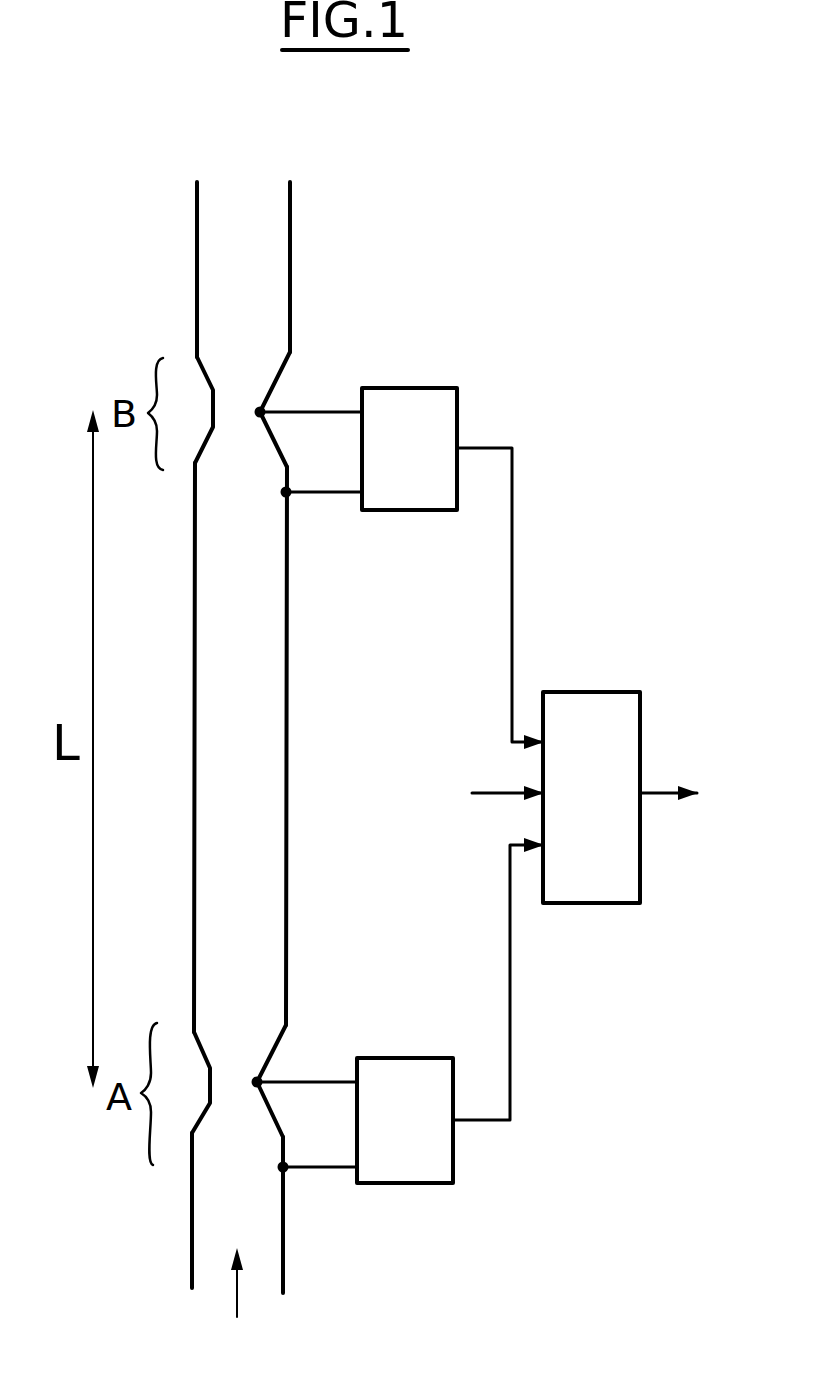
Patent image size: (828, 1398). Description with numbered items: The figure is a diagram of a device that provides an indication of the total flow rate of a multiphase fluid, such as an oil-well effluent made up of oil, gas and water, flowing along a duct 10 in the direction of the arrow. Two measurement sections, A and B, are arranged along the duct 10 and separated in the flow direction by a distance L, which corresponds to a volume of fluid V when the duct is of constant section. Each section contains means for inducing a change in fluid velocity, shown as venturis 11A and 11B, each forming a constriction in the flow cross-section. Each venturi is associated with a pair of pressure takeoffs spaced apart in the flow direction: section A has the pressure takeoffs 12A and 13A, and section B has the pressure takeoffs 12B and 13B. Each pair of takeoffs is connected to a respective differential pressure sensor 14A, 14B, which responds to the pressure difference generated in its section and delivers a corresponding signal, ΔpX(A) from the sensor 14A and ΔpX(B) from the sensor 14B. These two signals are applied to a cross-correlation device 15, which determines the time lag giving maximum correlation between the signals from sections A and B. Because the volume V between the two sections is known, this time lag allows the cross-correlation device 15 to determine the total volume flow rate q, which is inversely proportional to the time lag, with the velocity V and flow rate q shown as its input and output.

The duct 10 is at (192, 1253).
The venturi 11A is at (213, 1083).
The venturi 11B is at (222, 405).
The pressure takeoff 12A is at (288, 1173).
The pressure takeoff 12B is at (292, 500).
The pressure takeoff 13A is at (259, 1080).
The pressure takeoff 13B is at (262, 410).
The differential pressure sensor 14A is at (433, 1185).
The differential pressure sensor 14B is at (443, 388).
The cross-correlation device 15 is at (607, 692).